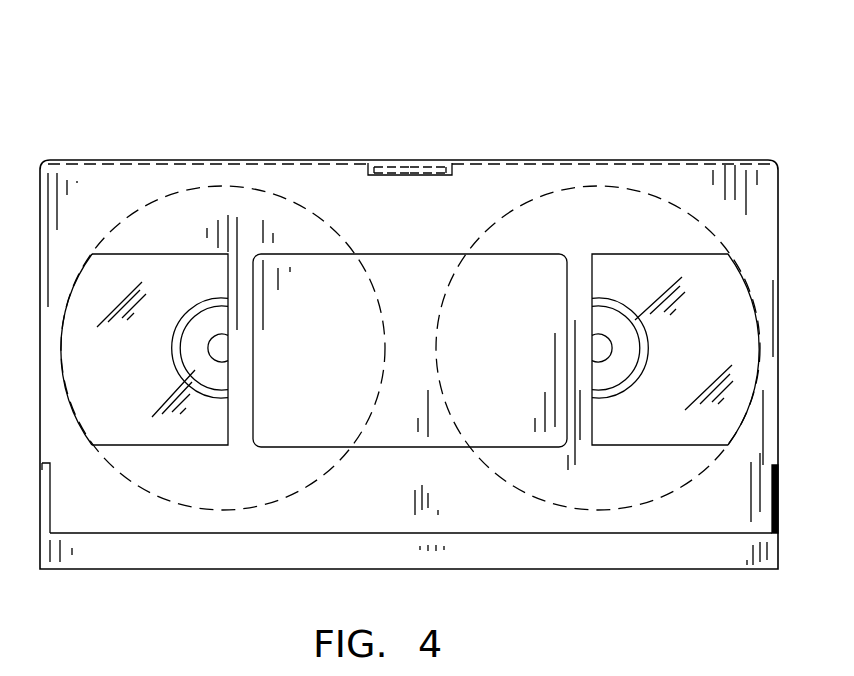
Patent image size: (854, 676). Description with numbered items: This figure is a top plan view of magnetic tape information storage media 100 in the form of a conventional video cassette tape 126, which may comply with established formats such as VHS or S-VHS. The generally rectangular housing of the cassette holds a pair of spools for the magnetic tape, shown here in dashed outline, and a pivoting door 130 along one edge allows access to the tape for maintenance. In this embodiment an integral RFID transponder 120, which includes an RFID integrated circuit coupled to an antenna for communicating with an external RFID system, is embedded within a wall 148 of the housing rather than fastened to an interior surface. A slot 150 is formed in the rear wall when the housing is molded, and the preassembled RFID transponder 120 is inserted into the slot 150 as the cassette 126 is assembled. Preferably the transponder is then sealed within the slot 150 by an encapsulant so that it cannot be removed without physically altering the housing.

The magnetic tape information storage media 100 is at (617, 112).
The RFID transponder 120 is at (430, 166).
The video cassette tape 126 is at (765, 190).
The pivoting door 130 is at (687, 562).
The wall of the housing 148 is at (452, 176).
The slot 150 is at (402, 166).